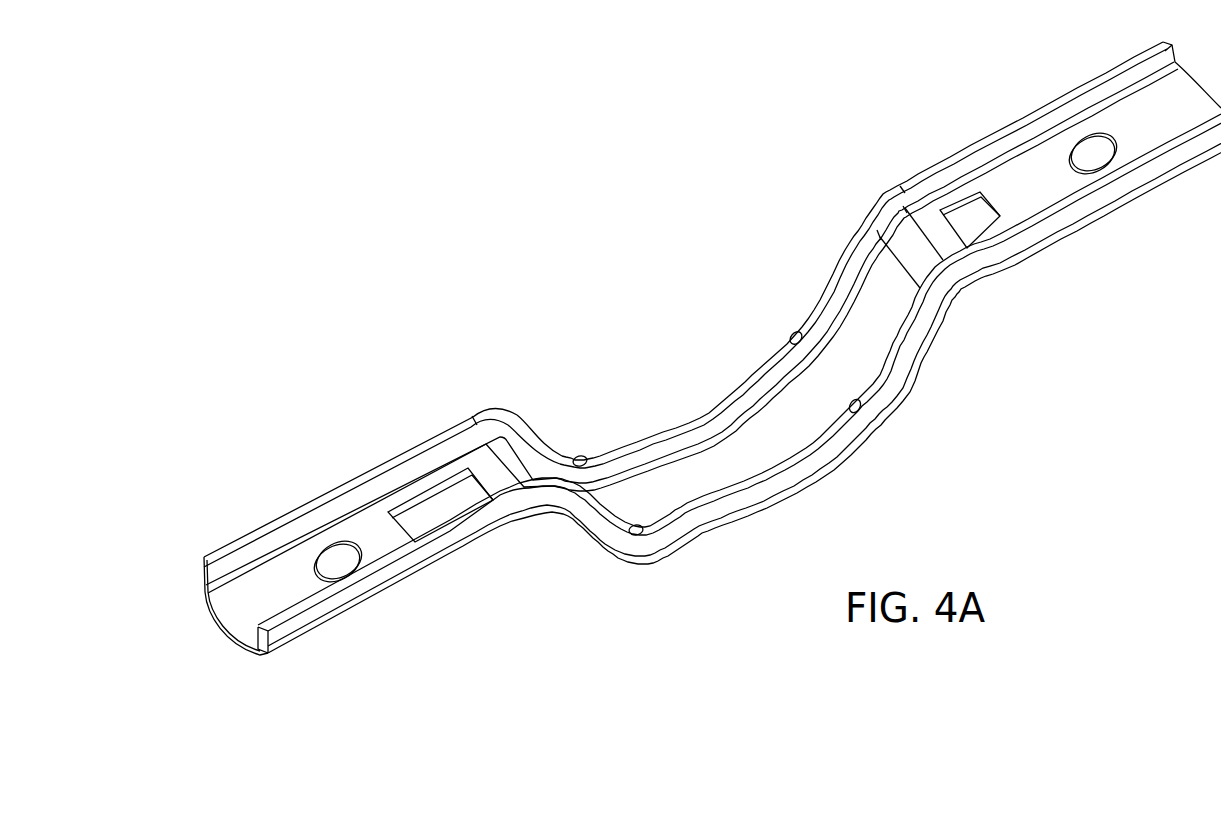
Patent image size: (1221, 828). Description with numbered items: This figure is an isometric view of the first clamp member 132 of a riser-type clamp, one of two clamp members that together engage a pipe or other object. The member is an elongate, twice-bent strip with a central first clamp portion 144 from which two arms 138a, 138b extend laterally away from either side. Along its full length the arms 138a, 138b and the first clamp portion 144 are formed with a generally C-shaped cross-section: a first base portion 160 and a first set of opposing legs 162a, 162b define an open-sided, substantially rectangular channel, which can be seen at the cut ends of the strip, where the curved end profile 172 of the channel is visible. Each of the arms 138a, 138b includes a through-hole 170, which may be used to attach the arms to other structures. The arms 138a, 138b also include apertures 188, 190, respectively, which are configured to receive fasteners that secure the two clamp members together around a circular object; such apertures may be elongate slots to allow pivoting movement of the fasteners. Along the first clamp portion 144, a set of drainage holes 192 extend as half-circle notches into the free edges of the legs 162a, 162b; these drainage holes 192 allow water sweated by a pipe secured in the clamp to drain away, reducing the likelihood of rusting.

The first clamp member 132 is at (412, 328).
The arm 138a is at (1018, 127).
The arm 138b is at (355, 475).
The first clamp portion 144 is at (727, 457).
The first base portion 160 is at (503, 460).
The first leg 162a is at (222, 547).
The second leg 162b is at (405, 572).
The through-hole 170 is at (340, 563).
The end profile 172 is at (235, 613).
The aperture 188 is at (988, 215).
The aperture 190 is at (447, 510).
The drainage holes 192 is at (797, 333).